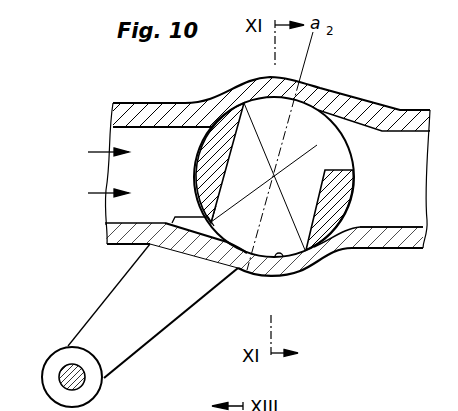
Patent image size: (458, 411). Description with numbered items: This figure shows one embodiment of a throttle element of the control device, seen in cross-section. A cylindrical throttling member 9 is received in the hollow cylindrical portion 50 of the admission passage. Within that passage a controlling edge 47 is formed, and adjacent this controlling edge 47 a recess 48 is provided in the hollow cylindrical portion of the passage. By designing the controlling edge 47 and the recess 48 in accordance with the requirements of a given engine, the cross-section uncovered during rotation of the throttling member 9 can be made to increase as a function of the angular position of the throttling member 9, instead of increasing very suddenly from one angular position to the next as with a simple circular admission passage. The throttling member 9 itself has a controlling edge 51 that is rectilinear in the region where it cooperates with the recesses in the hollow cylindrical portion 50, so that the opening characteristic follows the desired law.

The throttling member 9 is at (333, 233).
The controlling edge 47 is at (203, 238).
The recess 48 is at (188, 218).
The hollow cylindrical portion 50 is at (279, 256).
The controlling edge of the throttling member 51 is at (216, 220).